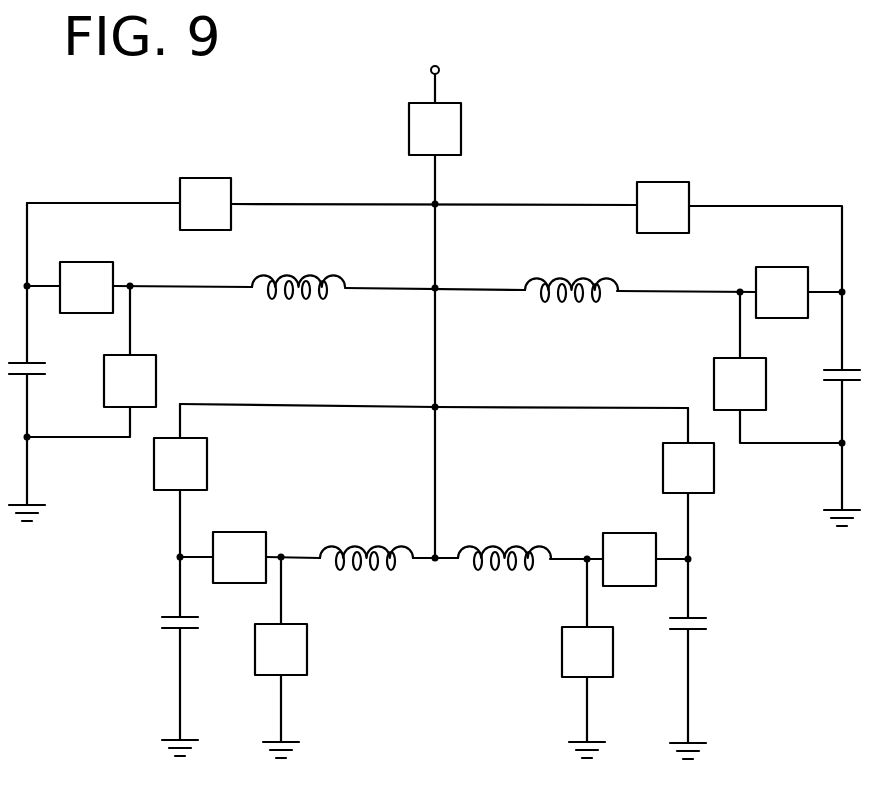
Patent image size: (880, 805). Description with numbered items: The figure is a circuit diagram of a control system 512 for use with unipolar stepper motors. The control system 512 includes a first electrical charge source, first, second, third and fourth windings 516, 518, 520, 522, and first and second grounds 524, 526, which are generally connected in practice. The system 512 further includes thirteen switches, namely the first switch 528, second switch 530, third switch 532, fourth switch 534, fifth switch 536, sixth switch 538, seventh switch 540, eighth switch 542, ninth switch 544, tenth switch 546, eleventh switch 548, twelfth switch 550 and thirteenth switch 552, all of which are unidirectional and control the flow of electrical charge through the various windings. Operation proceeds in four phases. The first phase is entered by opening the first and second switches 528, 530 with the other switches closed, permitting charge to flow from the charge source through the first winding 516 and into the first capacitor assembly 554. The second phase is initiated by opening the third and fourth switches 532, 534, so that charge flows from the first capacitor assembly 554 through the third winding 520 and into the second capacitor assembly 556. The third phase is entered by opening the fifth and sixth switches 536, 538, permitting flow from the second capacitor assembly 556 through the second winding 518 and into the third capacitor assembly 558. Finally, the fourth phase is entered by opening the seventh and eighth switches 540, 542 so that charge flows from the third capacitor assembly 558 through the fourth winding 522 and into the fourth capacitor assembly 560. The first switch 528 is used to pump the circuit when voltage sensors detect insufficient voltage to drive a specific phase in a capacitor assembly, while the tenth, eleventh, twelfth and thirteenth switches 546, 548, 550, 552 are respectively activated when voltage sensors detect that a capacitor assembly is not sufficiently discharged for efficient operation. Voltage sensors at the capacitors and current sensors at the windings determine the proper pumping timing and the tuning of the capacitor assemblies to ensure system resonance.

The control system 512 is at (196, 145).
The first winding 516 is at (297, 268).
The second winding 518 is at (575, 268).
The third winding 520 is at (363, 540).
The fourth winding 522 is at (508, 540).
The first ground 524 is at (305, 745).
The second ground 526 is at (567, 745).
The first switch 528 is at (462, 124).
The second switch 530 is at (83, 262).
The third switch 532 is at (231, 188).
The fourth switch 534 is at (235, 532).
The fifth switch 536 is at (207, 467).
The sixth switch 538 is at (783, 267).
The seventh switch 540 is at (663, 182).
The eighth switch 542 is at (623, 533).
The ninth switch 544 is at (457, 52).
The tenth switch 546 is at (156, 372).
The eleventh switch 548 is at (307, 644).
The twelfth switch 550 is at (714, 380).
The thirteenth switch 552 is at (562, 632).
The first capacitor assembly 554 is at (48, 368).
The second capacitor assembly 556 is at (160, 625).
The third capacitor assembly 558 is at (818, 378).
The fourth capacitor assembly 560 is at (713, 627).